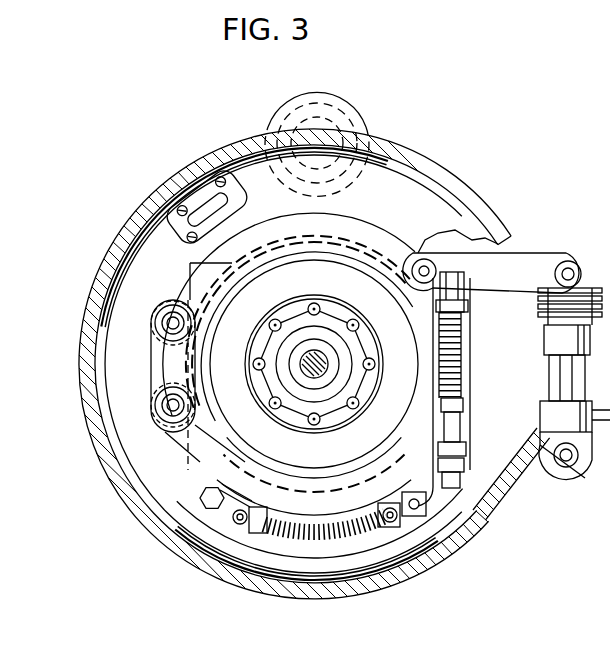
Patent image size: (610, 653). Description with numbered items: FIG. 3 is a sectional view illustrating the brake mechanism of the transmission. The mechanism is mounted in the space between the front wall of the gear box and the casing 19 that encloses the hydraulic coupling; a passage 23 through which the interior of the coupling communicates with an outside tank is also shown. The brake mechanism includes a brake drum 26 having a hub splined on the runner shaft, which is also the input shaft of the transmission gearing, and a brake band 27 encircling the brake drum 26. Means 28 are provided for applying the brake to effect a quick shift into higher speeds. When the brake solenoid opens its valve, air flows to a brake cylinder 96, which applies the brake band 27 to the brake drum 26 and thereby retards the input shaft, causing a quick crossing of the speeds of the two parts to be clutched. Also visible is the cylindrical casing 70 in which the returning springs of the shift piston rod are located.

The casing 19 is at (207, 565).
The passage 23 is at (182, 197).
The brake drum 26 is at (230, 435).
The brake band 27 is at (255, 260).
The means for applying the brake 28 is at (392, 204).
The cylindrical casing 70 is at (277, 112).
The brake cylinder 96 is at (560, 380).